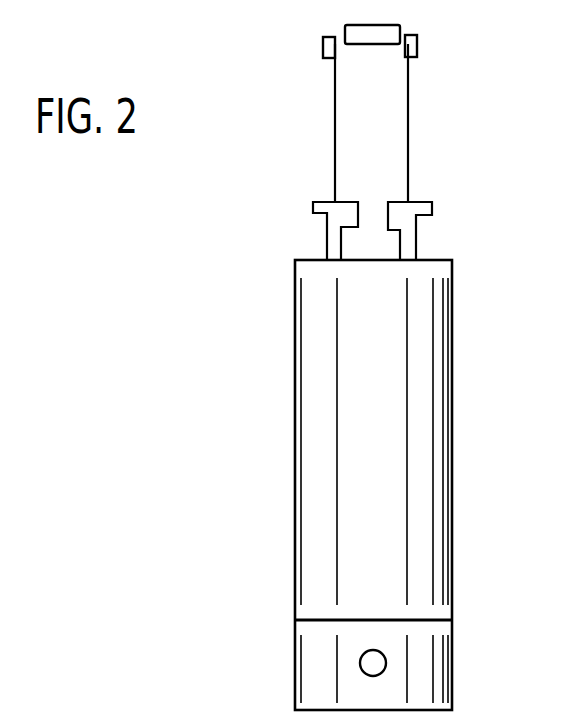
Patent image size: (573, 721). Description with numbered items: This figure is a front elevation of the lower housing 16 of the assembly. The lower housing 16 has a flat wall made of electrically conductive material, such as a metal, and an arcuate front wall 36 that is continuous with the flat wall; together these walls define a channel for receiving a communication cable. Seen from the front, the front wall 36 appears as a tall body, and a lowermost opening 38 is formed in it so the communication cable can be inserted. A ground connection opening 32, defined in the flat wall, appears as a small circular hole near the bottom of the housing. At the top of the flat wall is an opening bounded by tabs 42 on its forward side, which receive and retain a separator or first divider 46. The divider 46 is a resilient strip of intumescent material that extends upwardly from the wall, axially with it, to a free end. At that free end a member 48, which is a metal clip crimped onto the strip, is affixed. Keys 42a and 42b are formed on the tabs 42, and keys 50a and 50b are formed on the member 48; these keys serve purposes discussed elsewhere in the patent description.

The lower housing 16 is at (372, 367).
The ground connection opening 32 is at (372, 660).
The arcuate front wall 36 is at (385, 499).
The lowermost opening 38 is at (318, 642).
The tabs 42 is at (374, 204).
The key 42a is at (315, 206).
The key 42b is at (393, 207).
The first divider 46 is at (392, 137).
The member 48 is at (381, 40).
The key 50a is at (322, 46).
The key 50b is at (418, 45).